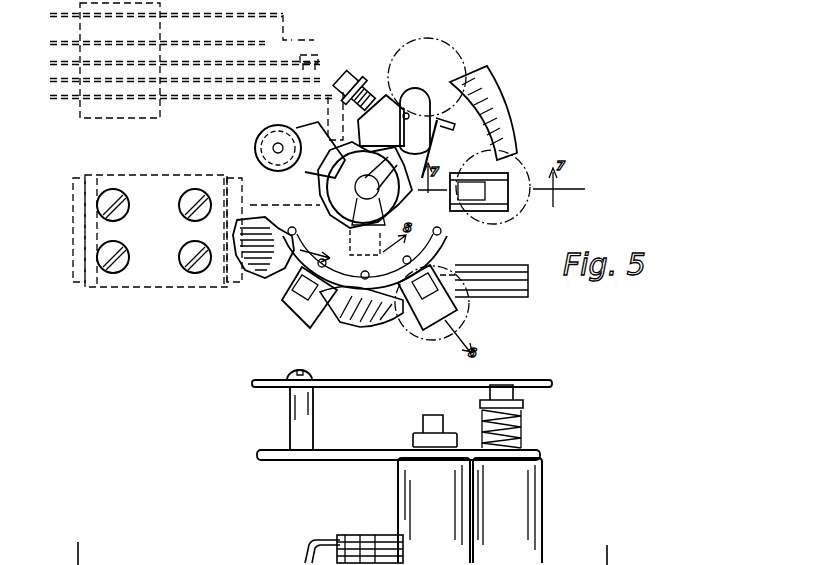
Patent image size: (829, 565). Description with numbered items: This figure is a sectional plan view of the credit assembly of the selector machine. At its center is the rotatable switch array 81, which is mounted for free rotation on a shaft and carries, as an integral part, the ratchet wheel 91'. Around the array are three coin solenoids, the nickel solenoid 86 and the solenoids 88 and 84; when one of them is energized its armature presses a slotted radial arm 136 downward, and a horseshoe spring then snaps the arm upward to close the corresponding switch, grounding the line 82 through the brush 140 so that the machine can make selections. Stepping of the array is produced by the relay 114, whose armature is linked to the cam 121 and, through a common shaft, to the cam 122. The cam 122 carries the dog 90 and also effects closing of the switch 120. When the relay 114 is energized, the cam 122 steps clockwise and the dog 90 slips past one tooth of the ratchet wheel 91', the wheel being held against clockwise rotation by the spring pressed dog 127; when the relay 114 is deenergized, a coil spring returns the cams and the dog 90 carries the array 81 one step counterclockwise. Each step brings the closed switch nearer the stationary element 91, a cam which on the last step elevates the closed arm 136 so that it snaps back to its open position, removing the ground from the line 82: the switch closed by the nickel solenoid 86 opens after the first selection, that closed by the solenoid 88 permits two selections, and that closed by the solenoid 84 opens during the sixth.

The switch array 81 is at (275, 302).
The line 82 is at (355, 535).
The solenoid 84 is at (455, 48).
The nickel solenoid 86 is at (513, 162).
The solenoid 88 is at (463, 314).
The dog 90 is at (381, 111).
The stationary element 91 is at (483, 108).
The ratchet wheel 91' is at (365, 185).
The relay 114 is at (164, 288).
The switch 120 is at (365, 258).
The cam 121 is at (300, 125).
The cam 122 is at (437, 149).
The spring pressed dog 127 is at (287, 193).
The slotted radial arm 136 is at (400, 316).
The brush 140 is at (316, 552).